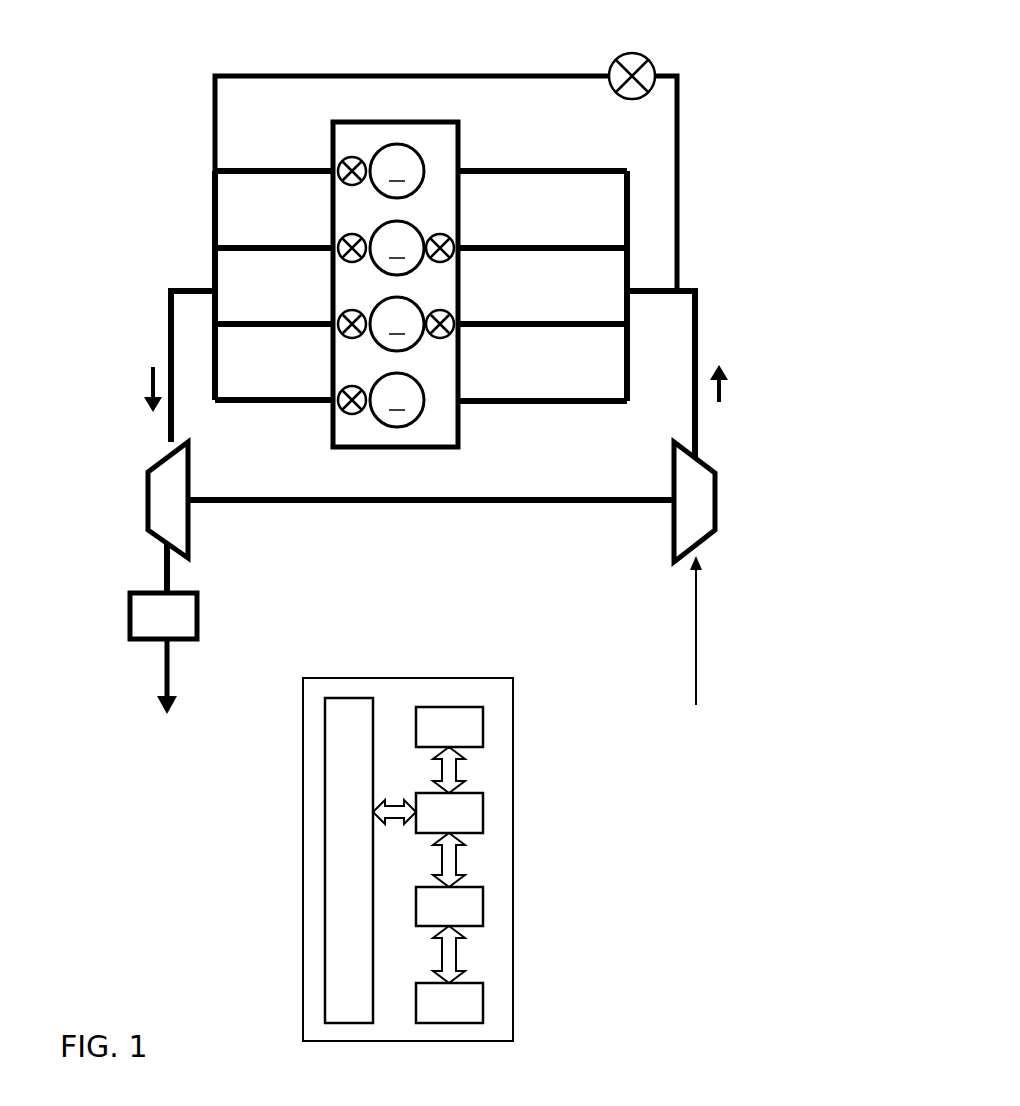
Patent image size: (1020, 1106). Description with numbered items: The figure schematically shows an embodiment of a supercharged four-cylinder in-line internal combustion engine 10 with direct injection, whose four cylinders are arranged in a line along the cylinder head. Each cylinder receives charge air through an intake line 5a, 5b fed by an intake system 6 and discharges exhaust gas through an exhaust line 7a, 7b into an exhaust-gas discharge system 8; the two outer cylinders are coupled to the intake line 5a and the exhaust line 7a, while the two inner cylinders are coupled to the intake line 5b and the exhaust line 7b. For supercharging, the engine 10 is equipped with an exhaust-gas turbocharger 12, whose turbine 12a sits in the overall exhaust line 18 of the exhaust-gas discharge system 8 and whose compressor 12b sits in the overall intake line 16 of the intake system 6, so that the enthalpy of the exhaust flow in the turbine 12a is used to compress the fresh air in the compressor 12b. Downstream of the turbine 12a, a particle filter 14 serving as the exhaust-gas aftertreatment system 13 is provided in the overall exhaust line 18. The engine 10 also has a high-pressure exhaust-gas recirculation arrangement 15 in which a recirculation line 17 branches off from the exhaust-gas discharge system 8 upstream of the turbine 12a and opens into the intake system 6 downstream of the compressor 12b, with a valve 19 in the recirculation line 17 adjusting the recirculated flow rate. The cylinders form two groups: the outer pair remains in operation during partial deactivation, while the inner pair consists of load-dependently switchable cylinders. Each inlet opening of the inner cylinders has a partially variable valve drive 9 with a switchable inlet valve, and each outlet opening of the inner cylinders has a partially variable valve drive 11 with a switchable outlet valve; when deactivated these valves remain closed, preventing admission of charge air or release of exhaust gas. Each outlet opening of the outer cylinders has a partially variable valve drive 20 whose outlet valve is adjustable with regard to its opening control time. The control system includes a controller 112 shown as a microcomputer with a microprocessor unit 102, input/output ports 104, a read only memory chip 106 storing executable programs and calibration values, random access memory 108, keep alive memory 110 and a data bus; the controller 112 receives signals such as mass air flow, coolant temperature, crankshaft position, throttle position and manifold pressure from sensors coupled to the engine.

The intake line 5a is at (510, 168).
The intake line 5b is at (495, 243).
The intake system 6 is at (775, 300).
The exhaust line 7a is at (285, 167).
The exhaust line 7b is at (287, 242).
The exhaust-gas discharge system 8 is at (140, 227).
The partially variable valve drive 9 is at (450, 235).
The internal combustion engine 10 is at (182, 135).
The partially variable valve drive 11 is at (342, 238).
The exhaust-gas turbocharger 12 is at (397, 508).
The turbine 12a is at (158, 513).
The compressor 12b is at (718, 535).
The exhaust-gas aftertreatment system 13 is at (147, 627).
The particle filter 14 is at (117, 628).
The exhaust-gas recirculation arrangement 15 is at (288, 47).
The overall intake line 16 is at (697, 410).
The recirculation line 17 is at (508, 73).
The overall exhaust line 18 is at (168, 350).
The valve 19 is at (648, 57).
The partially variable valve drive 20 is at (341, 162).
The microprocessor unit 102 is at (485, 805).
The input/output ports 104 is at (373, 707).
The read only memory chip 106 is at (485, 722).
The random access memory 108 is at (485, 903).
The keep alive memory 110 is at (485, 999).
The controller 112 is at (449, 848).